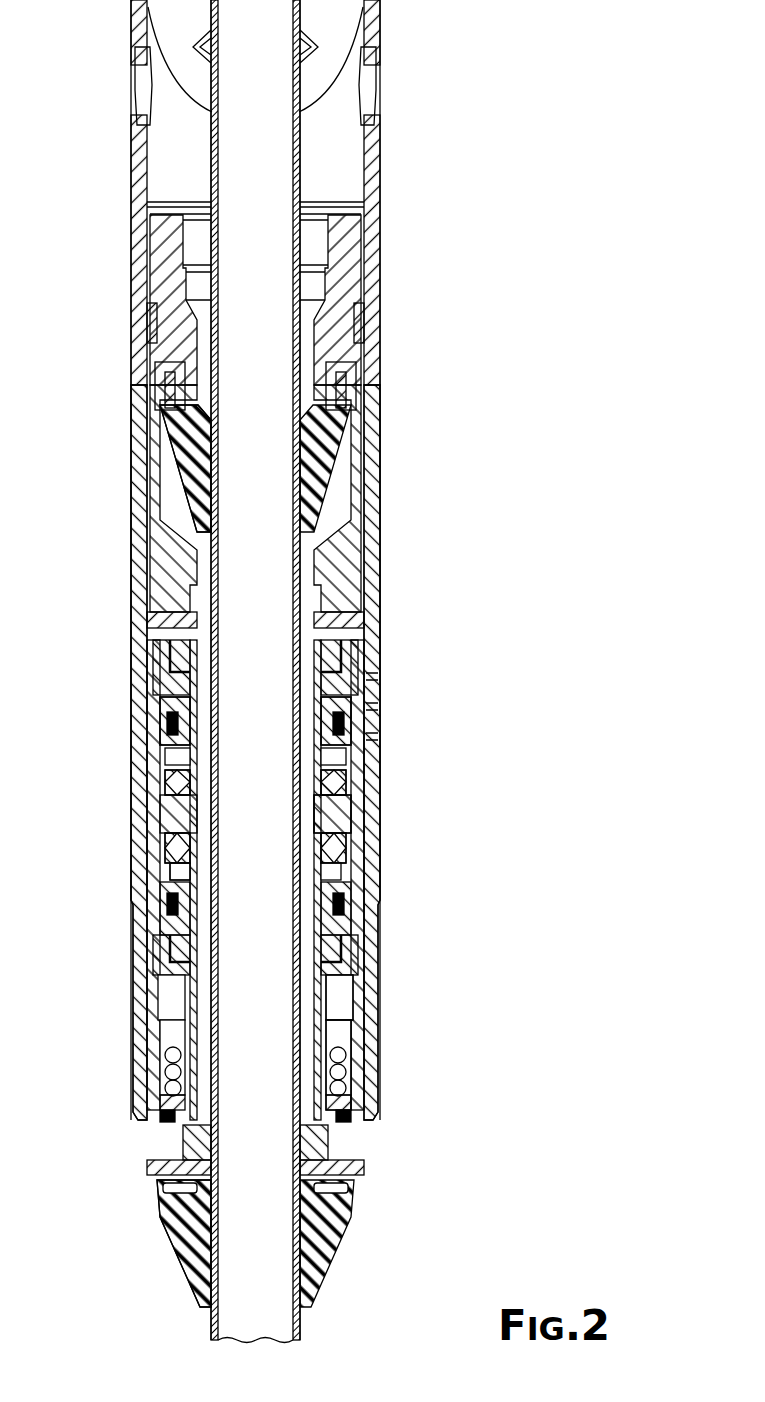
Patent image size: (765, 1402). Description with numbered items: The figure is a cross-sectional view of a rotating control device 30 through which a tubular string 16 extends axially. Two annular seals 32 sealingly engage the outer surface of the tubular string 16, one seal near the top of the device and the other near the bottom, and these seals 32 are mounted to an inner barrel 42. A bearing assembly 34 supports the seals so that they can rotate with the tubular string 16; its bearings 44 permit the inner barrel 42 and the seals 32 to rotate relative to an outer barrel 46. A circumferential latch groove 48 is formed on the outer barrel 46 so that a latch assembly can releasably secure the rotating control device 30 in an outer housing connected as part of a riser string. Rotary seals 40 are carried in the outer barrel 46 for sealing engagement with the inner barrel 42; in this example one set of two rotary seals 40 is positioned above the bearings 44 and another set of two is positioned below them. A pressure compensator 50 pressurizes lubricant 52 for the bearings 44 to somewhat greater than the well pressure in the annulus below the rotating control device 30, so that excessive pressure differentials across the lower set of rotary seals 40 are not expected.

The rotating control device 30 is at (555, 119).
The tubular string 16 is at (298, 153).
The seals 32 is at (183, 494).
The rotary seals 40 is at (185, 668).
The bearings 44 is at (352, 733).
The bearing assembly 34 is at (355, 779).
The inner barrel 42 is at (175, 873).
The latch groove 48 is at (133, 900).
The outer barrel 46 is at (355, 945).
The lubricant 52 is at (355, 1012).
The pressure compensator 50 is at (355, 1040).